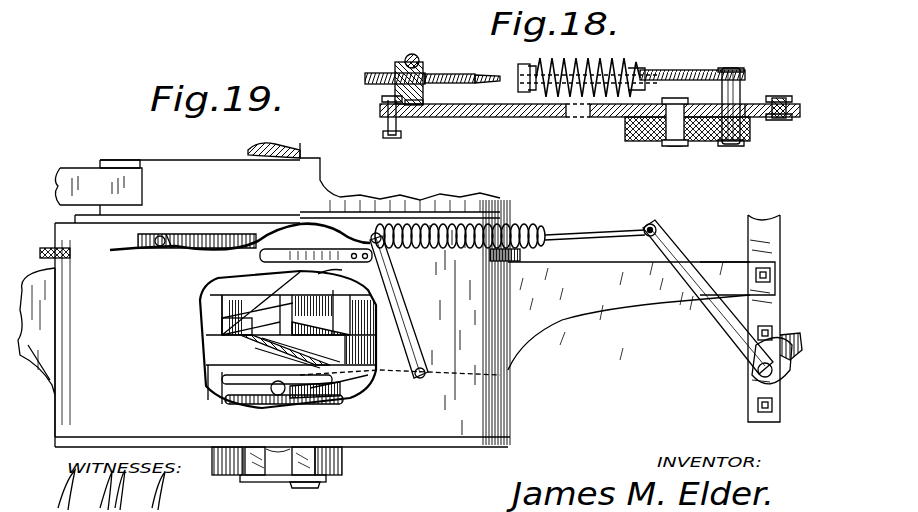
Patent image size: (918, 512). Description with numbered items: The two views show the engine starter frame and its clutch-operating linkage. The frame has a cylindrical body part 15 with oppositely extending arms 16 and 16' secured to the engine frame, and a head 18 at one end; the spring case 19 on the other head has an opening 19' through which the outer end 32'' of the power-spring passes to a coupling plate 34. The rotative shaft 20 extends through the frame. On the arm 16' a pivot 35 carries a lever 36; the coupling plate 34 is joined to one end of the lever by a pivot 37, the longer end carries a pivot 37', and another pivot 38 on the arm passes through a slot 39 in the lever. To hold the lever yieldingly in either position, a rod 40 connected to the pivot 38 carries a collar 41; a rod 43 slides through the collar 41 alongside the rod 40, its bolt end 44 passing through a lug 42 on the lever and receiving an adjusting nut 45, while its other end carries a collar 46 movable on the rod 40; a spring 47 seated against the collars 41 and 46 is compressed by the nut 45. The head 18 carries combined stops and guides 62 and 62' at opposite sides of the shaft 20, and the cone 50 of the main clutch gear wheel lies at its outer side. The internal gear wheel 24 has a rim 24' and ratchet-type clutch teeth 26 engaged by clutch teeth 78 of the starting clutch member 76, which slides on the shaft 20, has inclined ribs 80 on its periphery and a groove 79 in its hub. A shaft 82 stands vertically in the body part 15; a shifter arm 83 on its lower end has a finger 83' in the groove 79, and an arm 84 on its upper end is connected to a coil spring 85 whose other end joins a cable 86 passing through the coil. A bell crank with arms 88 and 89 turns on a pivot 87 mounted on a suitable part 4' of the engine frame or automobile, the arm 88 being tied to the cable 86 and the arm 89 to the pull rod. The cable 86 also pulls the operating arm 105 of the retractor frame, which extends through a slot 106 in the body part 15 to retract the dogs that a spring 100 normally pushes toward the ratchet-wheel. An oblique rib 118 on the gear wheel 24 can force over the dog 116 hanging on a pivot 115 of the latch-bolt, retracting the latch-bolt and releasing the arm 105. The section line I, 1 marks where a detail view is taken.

In FIG. 18, the lever 36 is at (533, 118).
In FIG. 18, the arm 16' is at (595, 128).
In FIG. 19, the arm 16' is at (35, 352).
In FIG. 18, the bolt end 44 is at (370, 73).
In FIG. 18, the rod 43 is at (484, 74).
In FIG. 18, the adjusting nut 45 is at (398, 62).
In FIG. 18, the lug 42 is at (412, 54).
In FIG. 18, the pivot 37' is at (418, 117).
In FIG. 18, the collar 41 is at (522, 64).
In FIG. 18, the spring 47 is at (588, 58).
In FIG. 18, the collar 46 is at (642, 66).
In FIG. 18, the rod 40 is at (690, 70).
In FIG. 18, the pivot 38 is at (730, 144).
In FIG. 18, the pivot 35 is at (660, 138).
In FIG. 18, the slot 39 is at (750, 104).
In FIG. 18, the coupling plate 34 is at (790, 96).
In FIG. 18, the pivot 37 is at (777, 69).
In FIG. 18, the internal gear wheel 24 is at (631, 5).
In FIG. 19, the dog 116 is at (199, 7).
In FIG. 19, the pivot 115 is at (239, 7).
In FIG. 19, the arm 16 is at (402, 295).
In FIG. 19, the body part 15 is at (509, 406).
In FIG. 19, the shaft 82 is at (440, 360).
In FIG. 19, the section line I I is at (509, 374).
In FIG. 19, the section line I I 1 is at (375, 362).
In FIG. 19, the outer end of power-spring 32'' is at (98, 170).
In FIG. 19, the opening 19' is at (120, 151).
In FIG. 19, the spring case 19 is at (177, 151).
In FIG. 19, the rotative shaft 20 is at (248, 150).
In FIG. 19, the coil spring 85 is at (512, 224).
In FIG. 19, the cable 86 is at (566, 230).
In FIG. 19, the arm 84 is at (404, 292).
In FIG. 19, the shifter arm 83 is at (400, 387).
In FIG. 19, the finger 83' is at (347, 391).
In FIG. 19, the spring 100 is at (40, 250).
In FIG. 19, the operating arm 105 is at (150, 248).
In FIG. 19, the slot 106 is at (172, 250).
In FIG. 19, the oblique angled rib 118 is at (336, 271).
In FIG. 19, the rim 24' is at (272, 339).
In FIG. 19, the clutch teeth 26 is at (212, 305).
In FIG. 19, the clutch teeth 78 is at (222, 326).
In FIG. 19, the starting clutch member 76 is at (214, 349).
In FIG. 19, the inclined ribs 80 is at (262, 342).
In FIG. 19, the groove 79 is at (232, 388).
In FIG. 19, the upright 4' is at (740, 318).
In FIG. 19, the arm 88 is at (720, 330).
In FIG. 19, the pivot 87 is at (757, 370).
In FIG. 19, the arm 89 is at (794, 334).
In FIG. 19, the combined stop and guide 62 is at (234, 468).
In FIG. 19, the combined stop and guide 62' is at (334, 461).
In FIG. 19, the cone 50 is at (326, 480).
In FIG. 19, the head 18 is at (398, 458).